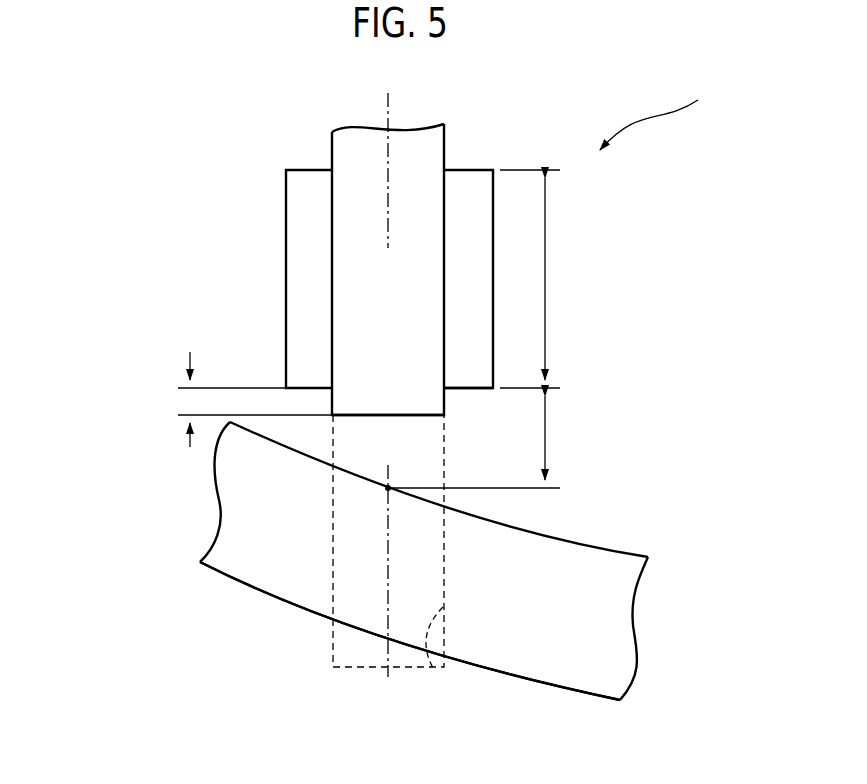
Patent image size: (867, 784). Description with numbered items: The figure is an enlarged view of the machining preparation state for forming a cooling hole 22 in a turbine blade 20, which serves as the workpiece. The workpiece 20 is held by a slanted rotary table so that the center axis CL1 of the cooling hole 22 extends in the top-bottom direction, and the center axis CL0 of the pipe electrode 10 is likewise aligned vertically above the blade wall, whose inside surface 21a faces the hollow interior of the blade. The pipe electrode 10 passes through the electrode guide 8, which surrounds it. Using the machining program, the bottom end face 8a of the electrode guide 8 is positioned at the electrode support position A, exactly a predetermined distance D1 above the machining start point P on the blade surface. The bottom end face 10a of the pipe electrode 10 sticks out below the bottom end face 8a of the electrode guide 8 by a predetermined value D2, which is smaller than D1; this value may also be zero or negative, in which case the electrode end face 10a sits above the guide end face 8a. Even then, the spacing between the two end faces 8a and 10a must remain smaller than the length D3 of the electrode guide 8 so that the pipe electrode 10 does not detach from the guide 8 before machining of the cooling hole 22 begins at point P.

The electrode guide 8 is at (285, 208).
The bottom end face of the electrode guide 8a is at (470, 388).
The pipe electrode 10 is at (445, 140).
The bottom end face of the pipe electrode 10a is at (360, 415).
The turbine blade 20 is at (600, 540).
The inside surface 21a is at (492, 673).
The cooling hole 22 is at (433, 668).
The machining start point P is at (388, 488).
The electrode support position A is at (661, 110).
The center axis of the pipe electrode CL0 is at (390, 154).
The center axis of the cooling hole CL1 is at (391, 591).
The predetermined distance D1 is at (484, 438).
The predetermined value of electrode projection D2 is at (235, 399).
The length of the electrode guide D3 is at (540, 275).